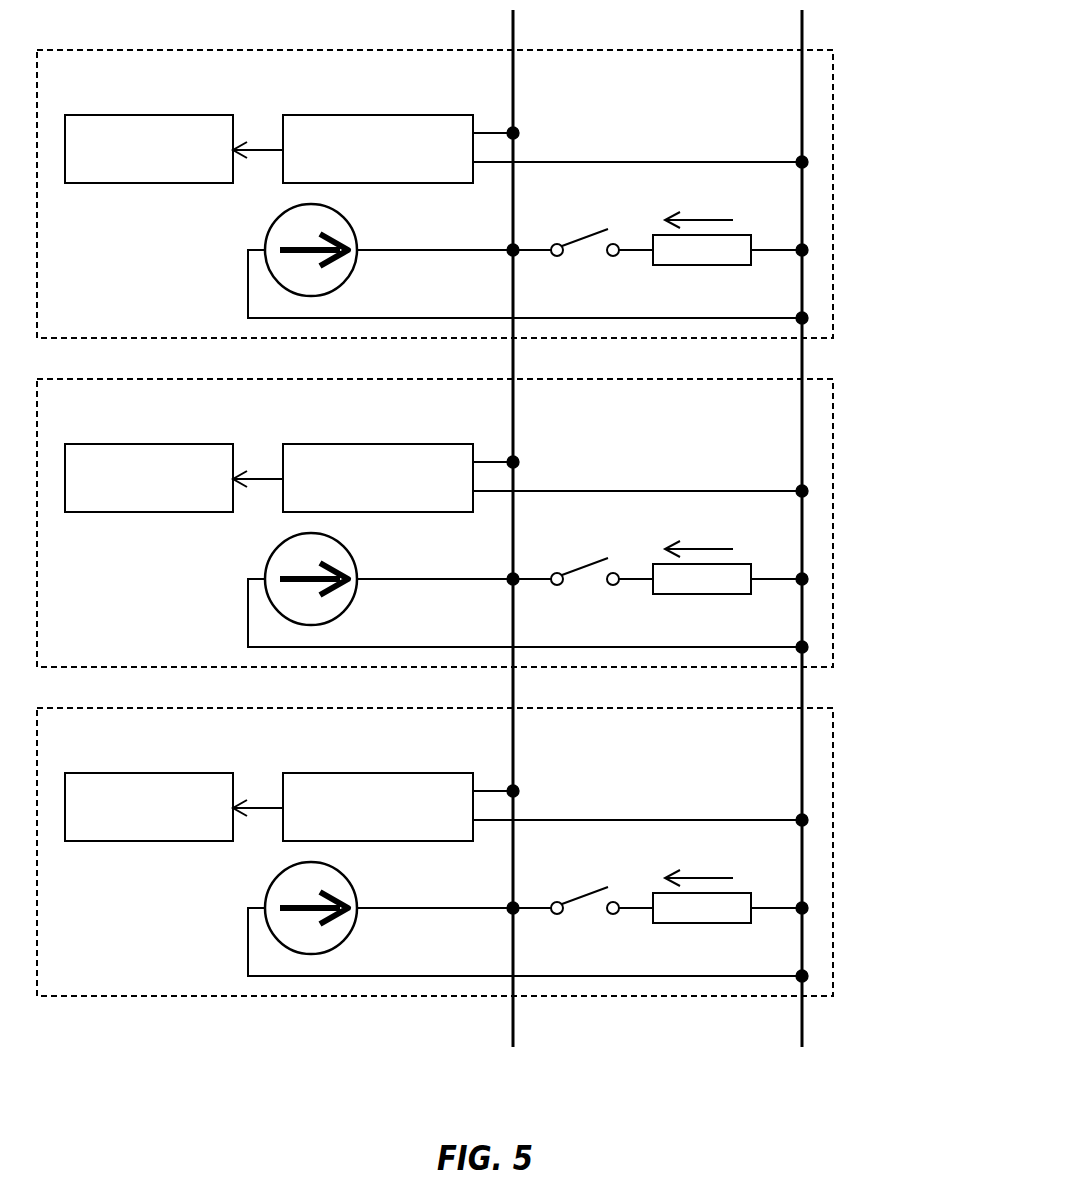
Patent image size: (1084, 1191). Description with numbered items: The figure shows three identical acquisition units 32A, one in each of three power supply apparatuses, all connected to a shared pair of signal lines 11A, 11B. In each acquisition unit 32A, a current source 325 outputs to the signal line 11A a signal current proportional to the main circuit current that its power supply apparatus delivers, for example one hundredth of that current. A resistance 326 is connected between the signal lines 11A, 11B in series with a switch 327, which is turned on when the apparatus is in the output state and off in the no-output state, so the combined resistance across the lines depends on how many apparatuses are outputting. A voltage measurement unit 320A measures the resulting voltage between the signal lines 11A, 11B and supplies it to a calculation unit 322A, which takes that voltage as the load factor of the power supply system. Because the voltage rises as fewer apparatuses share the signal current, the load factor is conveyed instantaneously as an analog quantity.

The signal line 11A is at (515, 27).
The signal line 11B is at (804, 22).
The acquisition unit 32A is at (435, 171).
The voltage measurement unit 320A is at (520, 120).
The calculation unit 322A is at (141, 186).
The current source 325 is at (528, 264).
The resistance 326 is at (720, 256).
The switch 327 is at (600, 214).